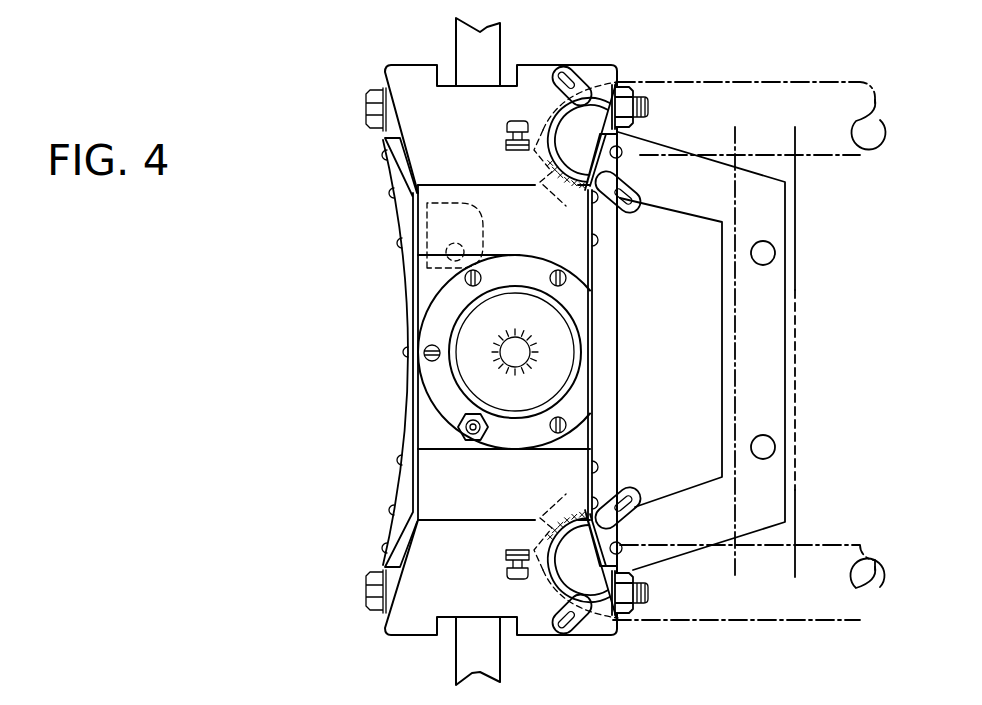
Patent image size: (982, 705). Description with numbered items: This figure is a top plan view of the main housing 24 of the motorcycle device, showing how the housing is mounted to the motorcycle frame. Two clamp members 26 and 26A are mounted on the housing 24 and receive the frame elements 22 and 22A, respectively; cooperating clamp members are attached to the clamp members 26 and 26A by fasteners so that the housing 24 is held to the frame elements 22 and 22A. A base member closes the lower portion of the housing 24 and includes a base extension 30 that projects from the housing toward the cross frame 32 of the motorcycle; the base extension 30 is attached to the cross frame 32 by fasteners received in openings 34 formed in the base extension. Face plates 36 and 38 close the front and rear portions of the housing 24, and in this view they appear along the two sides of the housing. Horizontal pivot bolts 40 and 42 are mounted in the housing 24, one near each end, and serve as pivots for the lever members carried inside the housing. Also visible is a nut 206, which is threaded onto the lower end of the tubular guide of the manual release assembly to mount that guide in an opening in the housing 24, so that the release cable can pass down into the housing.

The frame element 22 is at (738, 620).
The frame element 22A is at (782, 82).
The housing 24 is at (420, 640).
The clamp member 26 is at (541, 622).
The clamp member 26A is at (573, 90).
The base extension 30 is at (692, 500).
The cross frame 32 is at (797, 262).
The openings 34 is at (770, 440).
The face plate 36 is at (407, 481).
The face plate 38 is at (609, 289).
The horizontal pivot bolt 40 is at (366, 116).
The horizontal pivot bolt 42 is at (366, 590).
The nut 206 is at (465, 433).